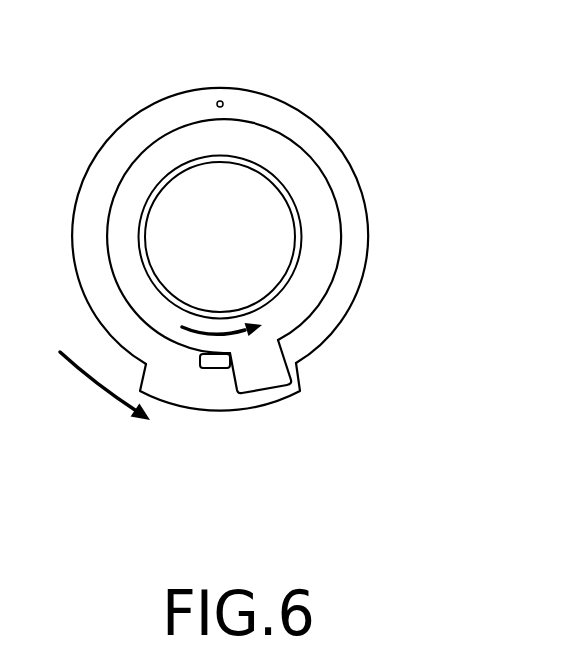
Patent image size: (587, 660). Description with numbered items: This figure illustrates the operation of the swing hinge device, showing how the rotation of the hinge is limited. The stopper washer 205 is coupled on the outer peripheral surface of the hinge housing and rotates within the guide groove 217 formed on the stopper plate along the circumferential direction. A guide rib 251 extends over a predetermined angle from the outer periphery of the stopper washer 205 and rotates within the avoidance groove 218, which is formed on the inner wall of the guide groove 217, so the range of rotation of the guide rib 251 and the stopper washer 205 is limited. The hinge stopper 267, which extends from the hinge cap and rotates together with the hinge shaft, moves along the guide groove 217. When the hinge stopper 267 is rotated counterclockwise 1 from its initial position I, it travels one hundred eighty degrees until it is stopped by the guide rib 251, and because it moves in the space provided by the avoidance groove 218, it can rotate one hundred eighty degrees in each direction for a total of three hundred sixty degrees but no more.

The stopper washer 205 is at (300, 142).
The guide groove 217 is at (358, 220).
The avoidance groove 218 is at (223, 410).
The guide rib 251 is at (270, 380).
The hinge stopper 267 is at (220, 362).
The initial position I is at (221, 103).
The counterclockwise rotation 1 is at (105, 386).